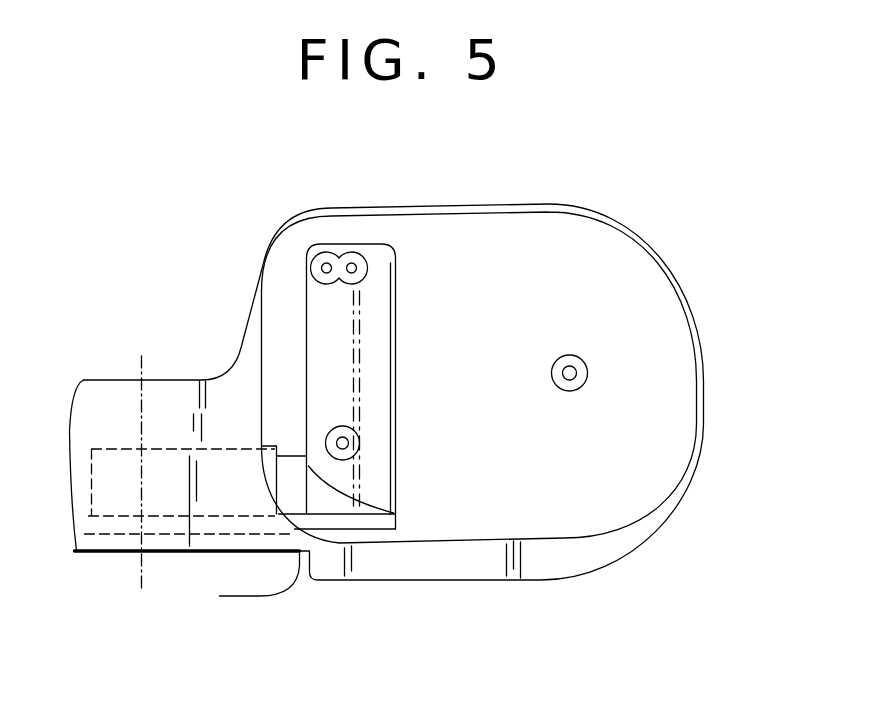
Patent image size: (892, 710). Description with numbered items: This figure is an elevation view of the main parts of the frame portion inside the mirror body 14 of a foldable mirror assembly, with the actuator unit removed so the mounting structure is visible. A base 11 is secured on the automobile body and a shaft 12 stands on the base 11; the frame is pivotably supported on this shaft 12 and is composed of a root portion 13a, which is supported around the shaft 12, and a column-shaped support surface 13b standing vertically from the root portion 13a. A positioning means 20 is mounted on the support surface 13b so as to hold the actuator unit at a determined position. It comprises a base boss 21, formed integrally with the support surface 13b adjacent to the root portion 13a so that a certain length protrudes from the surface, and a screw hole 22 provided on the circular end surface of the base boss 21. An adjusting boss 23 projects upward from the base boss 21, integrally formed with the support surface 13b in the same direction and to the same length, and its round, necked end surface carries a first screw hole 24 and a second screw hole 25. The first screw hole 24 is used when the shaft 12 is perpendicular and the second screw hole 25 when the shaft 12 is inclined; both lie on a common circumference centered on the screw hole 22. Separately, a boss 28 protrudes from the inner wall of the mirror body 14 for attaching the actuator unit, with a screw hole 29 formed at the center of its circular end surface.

The base 11 is at (262, 575).
The shaft 12 is at (142, 563).
The root portion 13a is at (358, 523).
The support surface 13b is at (376, 365).
The mirror body 14 is at (681, 289).
The positioning means 20 is at (367, 398).
The base boss 21 is at (358, 451).
The screw hole 22 is at (359, 438).
The adjusting boss 23 is at (366, 270).
The first screw hole 24 is at (351, 262).
The second screw hole 25 is at (324, 262).
The boss 28 is at (561, 356).
The screw hole 29 is at (571, 371).